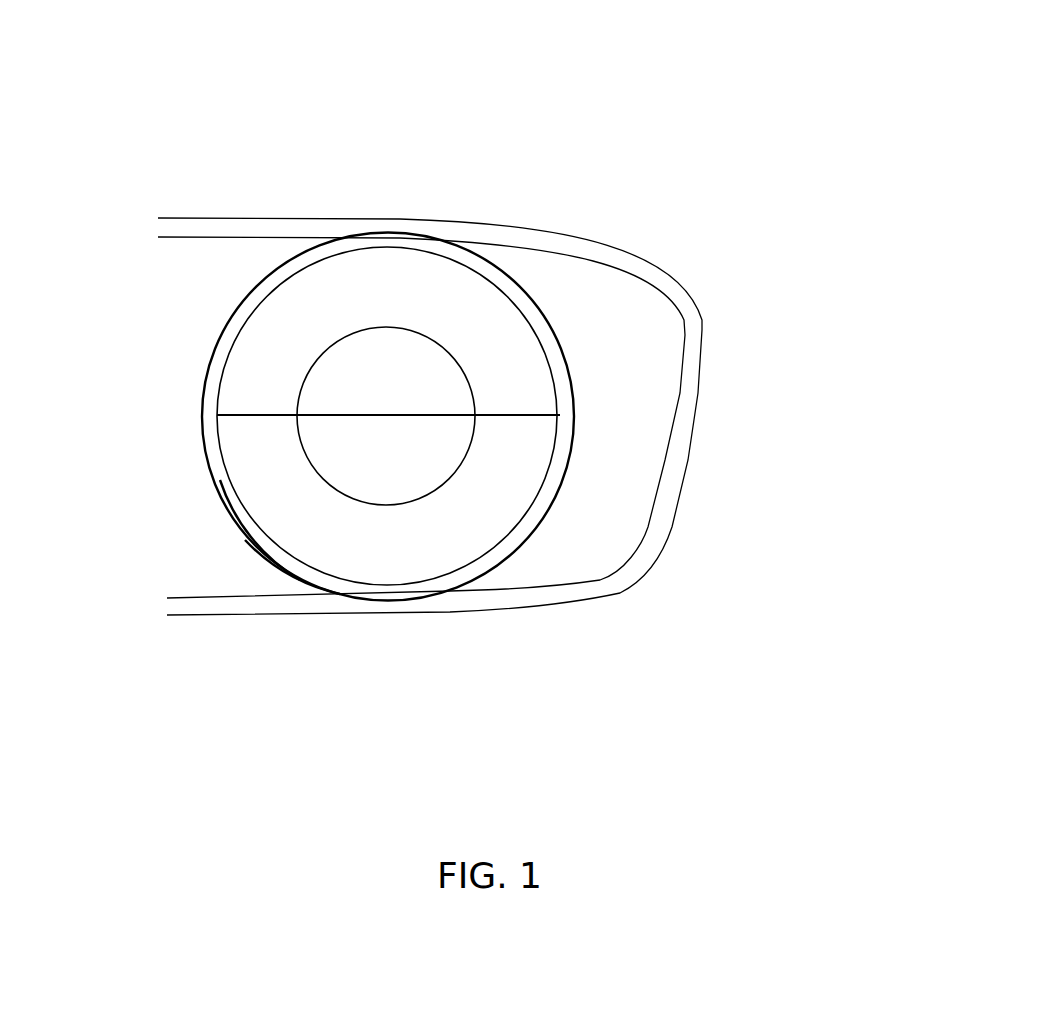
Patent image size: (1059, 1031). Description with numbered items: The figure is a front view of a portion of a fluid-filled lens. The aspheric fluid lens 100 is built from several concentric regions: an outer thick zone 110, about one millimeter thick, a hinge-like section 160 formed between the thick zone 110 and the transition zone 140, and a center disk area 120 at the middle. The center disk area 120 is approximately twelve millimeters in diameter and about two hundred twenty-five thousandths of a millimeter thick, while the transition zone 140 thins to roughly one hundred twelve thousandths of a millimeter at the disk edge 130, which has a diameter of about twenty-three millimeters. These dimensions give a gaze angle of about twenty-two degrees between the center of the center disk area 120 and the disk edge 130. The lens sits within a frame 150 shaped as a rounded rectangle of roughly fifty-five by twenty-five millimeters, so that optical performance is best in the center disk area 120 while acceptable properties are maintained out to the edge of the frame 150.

The aspheric fluid lens 100 is at (419, 385).
The thick zone 110 is at (210, 288).
The center disk area 120 is at (303, 442).
The disk edge 130 is at (253, 525).
The transition zone 140 is at (310, 295).
The frame 150 is at (677, 228).
The hinge-like section 160 is at (293, 568).